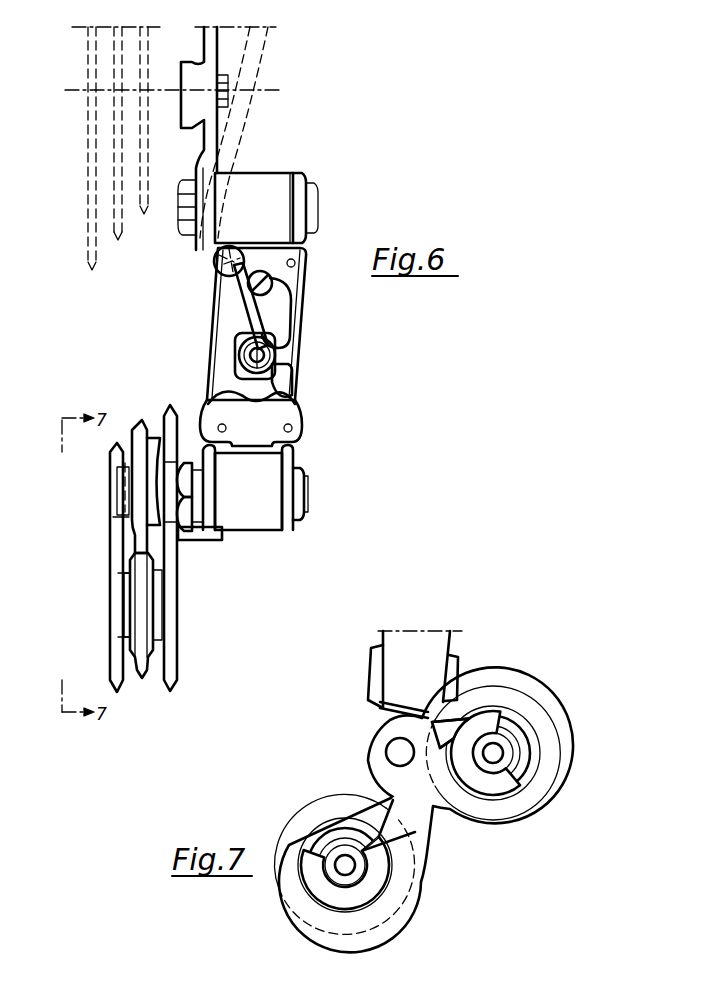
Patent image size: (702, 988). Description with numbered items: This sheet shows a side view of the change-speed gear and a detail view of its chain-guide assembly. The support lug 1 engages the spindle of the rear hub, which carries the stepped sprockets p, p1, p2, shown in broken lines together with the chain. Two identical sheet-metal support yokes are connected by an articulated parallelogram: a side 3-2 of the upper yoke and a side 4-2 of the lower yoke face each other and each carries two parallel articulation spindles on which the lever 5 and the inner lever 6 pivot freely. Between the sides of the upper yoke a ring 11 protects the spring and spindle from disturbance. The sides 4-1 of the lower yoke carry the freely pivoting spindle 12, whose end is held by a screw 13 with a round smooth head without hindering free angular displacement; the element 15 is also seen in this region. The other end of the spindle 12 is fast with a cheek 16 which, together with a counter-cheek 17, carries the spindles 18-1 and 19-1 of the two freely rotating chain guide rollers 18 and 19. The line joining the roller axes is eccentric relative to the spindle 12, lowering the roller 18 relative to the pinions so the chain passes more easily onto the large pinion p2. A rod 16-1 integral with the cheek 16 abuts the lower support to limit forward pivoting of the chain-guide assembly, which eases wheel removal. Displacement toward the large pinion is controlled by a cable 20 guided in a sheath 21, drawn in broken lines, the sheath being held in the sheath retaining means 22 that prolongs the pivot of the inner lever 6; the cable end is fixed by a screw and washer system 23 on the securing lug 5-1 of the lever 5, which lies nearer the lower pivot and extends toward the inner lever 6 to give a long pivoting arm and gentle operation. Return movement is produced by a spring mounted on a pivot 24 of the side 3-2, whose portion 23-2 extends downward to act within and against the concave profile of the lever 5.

In FIG. 6, the support lug 1 is at (208, 135).
In FIG. 6, the sprocket p is at (144, 214).
In FIG. 6, the sprocket p1 is at (118, 240).
In FIG. 6, the large-diameter sprocket p2 is at (90, 270).
In FIG. 6, the side of upper support yoke 3-2 is at (280, 272).
In FIG. 6, the side of lower support yoke 4-1 is at (288, 530).
In FIG. 6, the side of lower support yoke 4-2 is at (248, 432).
In FIG. 7, the side of lower support yoke 4-2 is at (386, 703).
In FIG. 6, the lever 5 is at (298, 324).
In FIG. 6, the securing lug 5-1 is at (240, 373).
In FIG. 6, the inner lever 6 is at (222, 358).
In FIG. 7, the inner lever 6 is at (430, 645).
In FIG. 6, the ring 11 is at (266, 196).
In FIG. 7, the spindle 12 is at (398, 752).
In FIG. 6, the screw 13 is at (308, 494).
In FIG. 6, the lower cylinder 15 is at (266, 522).
In FIG. 6, the cheek 16 is at (166, 605).
In FIG. 6, the rod 16-1 is at (192, 536).
In FIG. 6, the counter-cheek 17 is at (118, 590).
In FIG. 6, the chain guide roller 18 is at (146, 466).
In FIG. 7, the chain guide roller 18 is at (525, 788).
In FIG. 7, the roller spindle 18-1 is at (495, 757).
In FIG. 6, the chain guide roller 19 is at (142, 682).
In FIG. 7, the chain guide roller 19 is at (312, 838).
In FIG. 7, the roller spindle 19-1 is at (343, 867).
In FIG. 6, the cable 20 is at (255, 318).
In FIG. 6, the sheath 21 is at (226, 147).
In FIG. 6, the sheath retaining means 22 is at (214, 264).
In FIG. 6, the screw and washer system 23 is at (250, 347).
In FIG. 6, the spring portion 23-2 is at (273, 322).
In FIG. 6, the pivot 24 is at (255, 291).